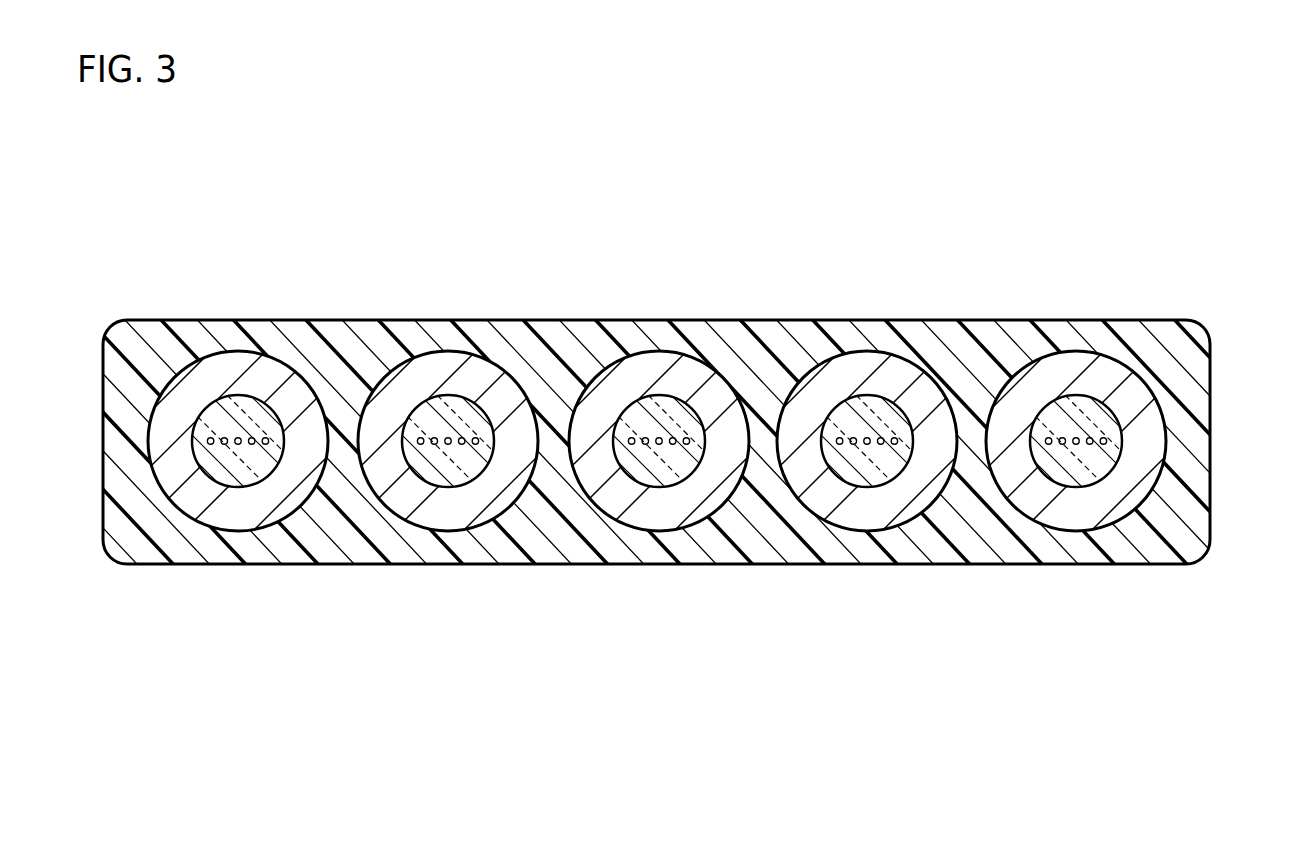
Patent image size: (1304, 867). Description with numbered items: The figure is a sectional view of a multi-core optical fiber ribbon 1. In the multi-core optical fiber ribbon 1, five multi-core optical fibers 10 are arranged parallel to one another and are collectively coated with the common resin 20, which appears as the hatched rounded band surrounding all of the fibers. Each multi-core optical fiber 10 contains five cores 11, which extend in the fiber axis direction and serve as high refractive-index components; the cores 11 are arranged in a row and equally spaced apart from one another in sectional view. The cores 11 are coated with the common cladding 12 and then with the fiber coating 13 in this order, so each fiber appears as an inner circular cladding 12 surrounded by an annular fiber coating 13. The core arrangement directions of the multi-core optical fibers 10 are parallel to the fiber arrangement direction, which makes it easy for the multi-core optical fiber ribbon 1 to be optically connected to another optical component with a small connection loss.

The multi-core optical fiber ribbon 1 is at (748, 275).
The multi-core optical fiber 10 is at (655, 465).
The core 11 is at (271, 539).
The cladding 12 is at (236, 511).
The fiber coating 13 is at (238, 435).
The common resin 20 is at (1177, 383).